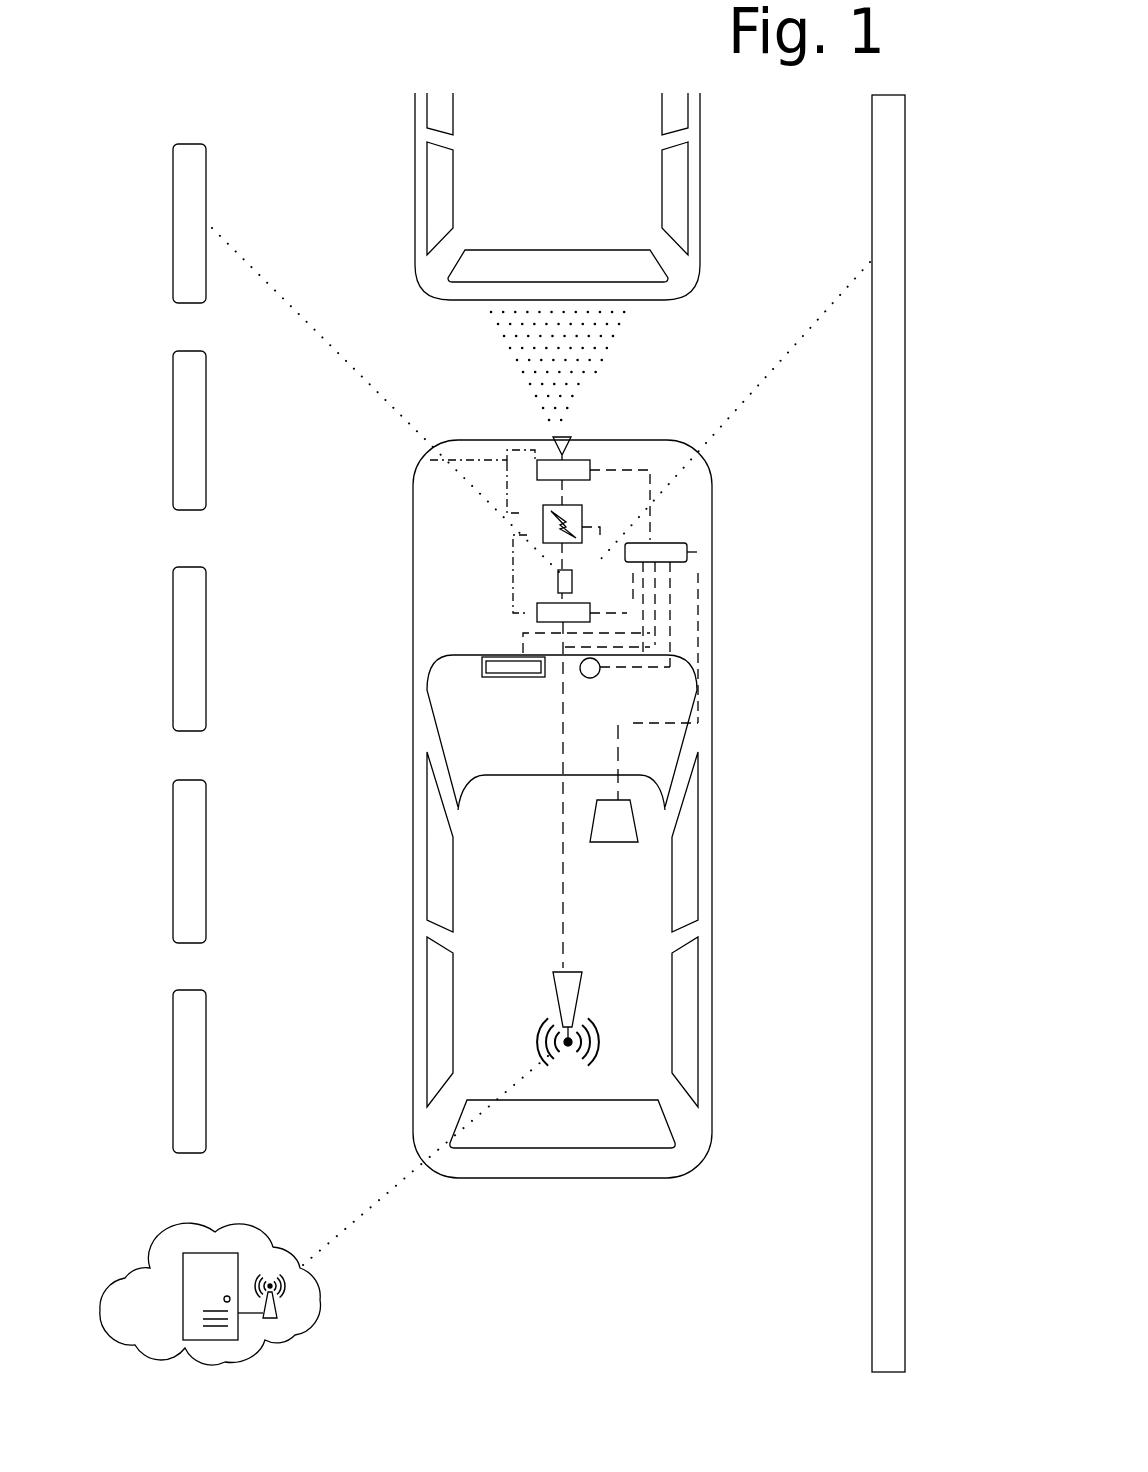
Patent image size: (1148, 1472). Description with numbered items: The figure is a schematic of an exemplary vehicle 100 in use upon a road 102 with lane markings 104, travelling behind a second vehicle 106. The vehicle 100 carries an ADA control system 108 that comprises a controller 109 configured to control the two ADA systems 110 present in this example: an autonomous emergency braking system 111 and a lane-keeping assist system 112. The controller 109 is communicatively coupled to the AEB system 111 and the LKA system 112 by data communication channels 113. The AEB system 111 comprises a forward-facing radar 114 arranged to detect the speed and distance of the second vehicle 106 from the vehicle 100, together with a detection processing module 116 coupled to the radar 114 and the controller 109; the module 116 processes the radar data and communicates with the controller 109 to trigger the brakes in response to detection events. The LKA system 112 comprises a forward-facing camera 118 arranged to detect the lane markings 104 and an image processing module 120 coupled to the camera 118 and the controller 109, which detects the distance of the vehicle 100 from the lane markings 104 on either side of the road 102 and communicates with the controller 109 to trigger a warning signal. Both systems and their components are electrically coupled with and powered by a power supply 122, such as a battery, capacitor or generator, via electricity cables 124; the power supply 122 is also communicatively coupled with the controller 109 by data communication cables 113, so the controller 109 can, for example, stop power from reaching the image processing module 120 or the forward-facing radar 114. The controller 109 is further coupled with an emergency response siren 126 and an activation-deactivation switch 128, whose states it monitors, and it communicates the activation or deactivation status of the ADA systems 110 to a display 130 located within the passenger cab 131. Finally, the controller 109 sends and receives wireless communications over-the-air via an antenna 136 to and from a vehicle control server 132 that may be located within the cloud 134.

The vehicle 100 is at (540, 884).
The road 102 is at (328, 944).
The lane markings 104 is at (870, 1125).
The second vehicle 106 is at (577, 218).
The ADA control system 108 is at (703, 540).
The controller 109 is at (690, 561).
The ADA systems 110 is at (589, 576).
The autonomous emergency braking (AEB) system 111 is at (520, 482).
The lane-keeping assist (LKA) system 112 is at (524, 602).
The data communication channels 113 is at (643, 572).
The forward-facing radar 114 is at (568, 440).
The detection processing module 116 is at (588, 458).
The forward-facing camera 118 is at (558, 582).
The image processing module 120 is at (538, 620).
The power supply 122 is at (543, 527).
The electricity cables 124 is at (430, 460).
The emergency response siren 126 is at (640, 820).
The activation-deactivation switch 128 is at (597, 676).
The display 130 is at (510, 678).
The passenger cab 131 is at (480, 747).
The vehicle control server 132 is at (234, 1280).
The cloud 134 is at (197, 1270).
The antenna 136 is at (600, 1048).